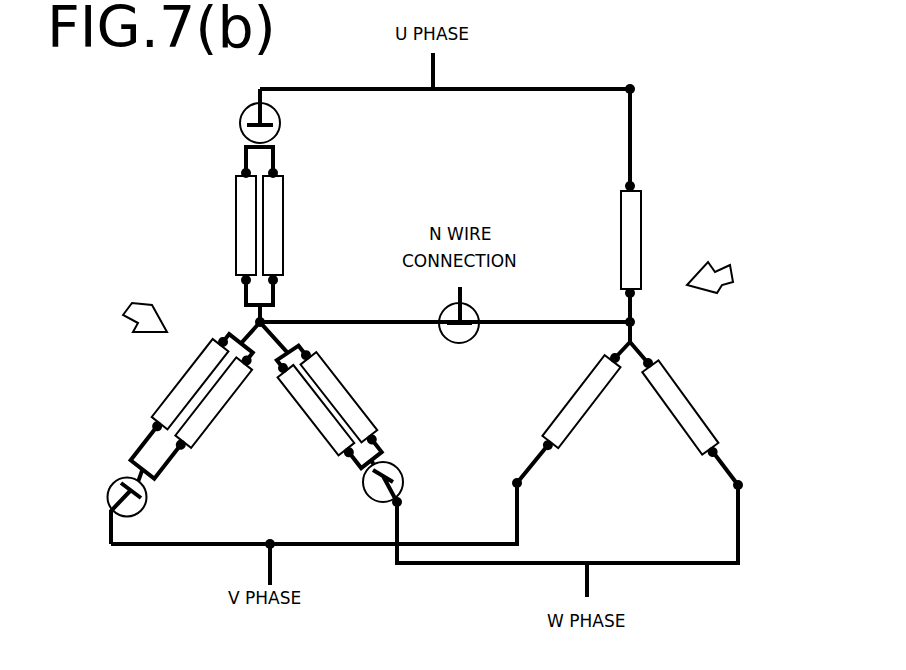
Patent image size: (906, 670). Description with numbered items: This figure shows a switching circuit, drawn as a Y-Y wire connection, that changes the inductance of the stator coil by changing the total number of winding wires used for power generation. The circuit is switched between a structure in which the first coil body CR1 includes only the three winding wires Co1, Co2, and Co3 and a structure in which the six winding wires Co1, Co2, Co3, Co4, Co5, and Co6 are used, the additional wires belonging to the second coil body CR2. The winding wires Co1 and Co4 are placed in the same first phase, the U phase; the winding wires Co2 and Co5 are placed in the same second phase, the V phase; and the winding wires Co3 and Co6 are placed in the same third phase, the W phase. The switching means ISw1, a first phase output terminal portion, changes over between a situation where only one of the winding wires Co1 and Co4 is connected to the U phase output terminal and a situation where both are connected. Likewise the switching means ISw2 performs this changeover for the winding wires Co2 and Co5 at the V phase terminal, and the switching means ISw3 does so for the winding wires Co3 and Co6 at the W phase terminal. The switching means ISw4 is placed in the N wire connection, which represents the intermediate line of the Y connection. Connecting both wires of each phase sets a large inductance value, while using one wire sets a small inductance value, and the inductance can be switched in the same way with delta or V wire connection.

The winding wire Co1 is at (277, 230).
The winding wire Co2 is at (220, 398).
The winding wire Co3 is at (327, 432).
The winding wire Co4 is at (240, 220).
The winding wire Co5 is at (173, 390).
The winding wire Co6 is at (357, 413).
The switching means ISw1 is at (275, 115).
The switching means ISw2 is at (110, 483).
The switching means ISw3 is at (403, 477).
The switching means ISw4 is at (480, 311).
The first coil body CR1 is at (121, 314).
The second coil body CR2 is at (735, 275).